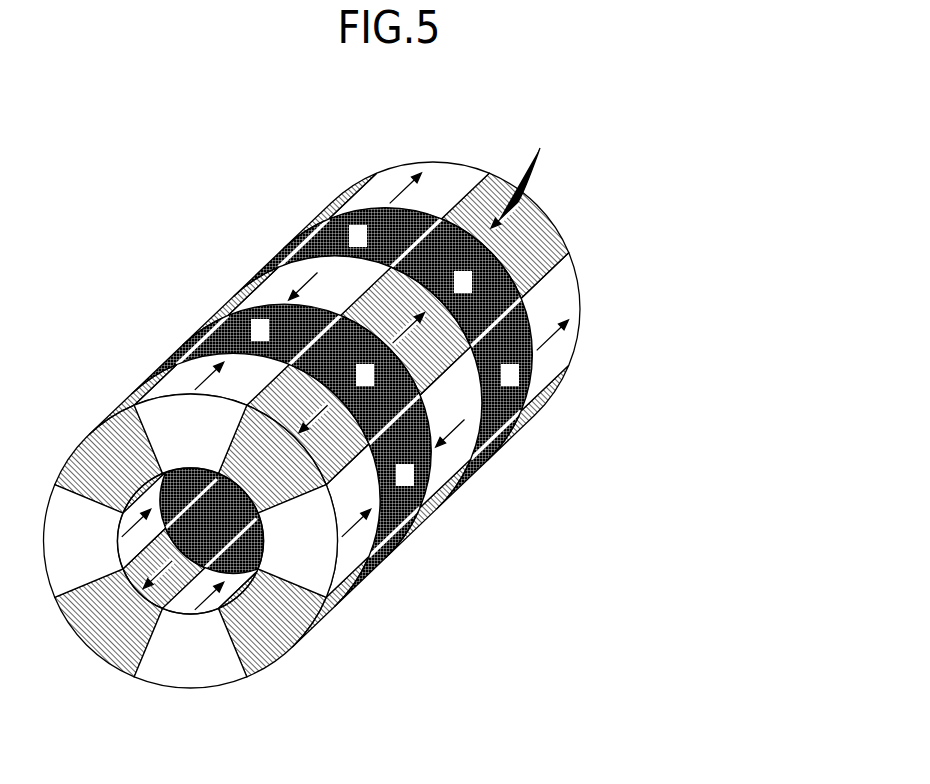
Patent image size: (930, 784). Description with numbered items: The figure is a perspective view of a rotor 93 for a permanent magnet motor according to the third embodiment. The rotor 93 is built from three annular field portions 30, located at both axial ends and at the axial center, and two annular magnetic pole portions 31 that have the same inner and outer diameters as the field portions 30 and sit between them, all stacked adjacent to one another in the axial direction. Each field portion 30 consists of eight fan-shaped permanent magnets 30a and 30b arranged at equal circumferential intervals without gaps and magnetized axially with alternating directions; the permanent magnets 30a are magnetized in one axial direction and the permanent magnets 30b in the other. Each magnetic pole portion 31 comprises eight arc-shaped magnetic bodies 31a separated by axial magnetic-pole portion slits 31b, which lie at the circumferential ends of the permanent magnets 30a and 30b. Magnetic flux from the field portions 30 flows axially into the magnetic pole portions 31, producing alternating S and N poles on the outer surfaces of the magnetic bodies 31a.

The field portion 30 is at (311, 454).
The permanent magnet 30a is at (178, 682).
The permanent magnet 30b is at (105, 652).
The magnetic pole portion 31 is at (338, 430).
The magnetic body 31a is at (500, 405).
The magnetic-pole portion slit 31b is at (397, 557).
The rotor 93 is at (632, 124).